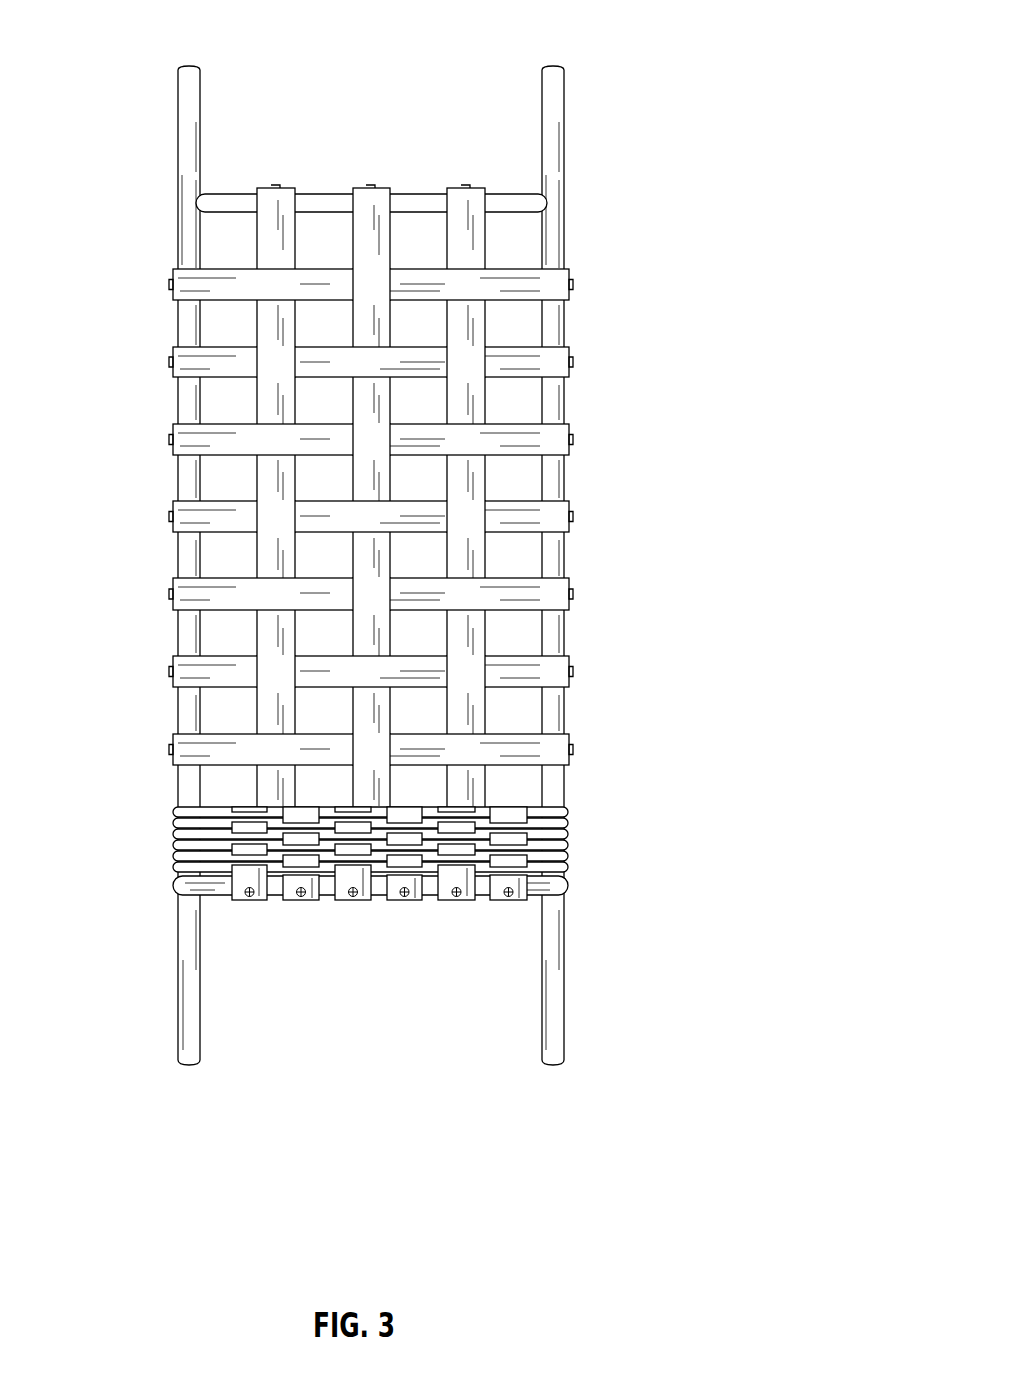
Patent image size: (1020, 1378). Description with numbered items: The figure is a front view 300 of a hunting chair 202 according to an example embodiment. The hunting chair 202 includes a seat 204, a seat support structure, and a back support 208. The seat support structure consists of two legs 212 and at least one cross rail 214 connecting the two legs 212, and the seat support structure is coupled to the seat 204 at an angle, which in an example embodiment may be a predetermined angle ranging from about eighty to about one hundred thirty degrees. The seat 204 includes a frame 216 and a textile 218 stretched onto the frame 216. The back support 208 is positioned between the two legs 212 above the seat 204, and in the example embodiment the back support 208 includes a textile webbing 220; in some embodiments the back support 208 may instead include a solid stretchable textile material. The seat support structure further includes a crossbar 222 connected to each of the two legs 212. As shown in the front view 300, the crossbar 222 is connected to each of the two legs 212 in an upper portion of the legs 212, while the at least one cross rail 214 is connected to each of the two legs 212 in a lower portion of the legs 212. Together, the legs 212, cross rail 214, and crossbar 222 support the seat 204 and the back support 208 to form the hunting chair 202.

The hunting chair 202 is at (553, 88).
The seat 204 is at (572, 365).
The back support 208 is at (258, 440).
The legs 212 is at (188, 635).
The cross rail 214 is at (563, 808).
The frame 216 is at (220, 892).
The textile 218 is at (230, 838).
The textile webbing 220 is at (458, 485).
The crossbar 222 is at (332, 194).
The front view 300 is at (705, 115).